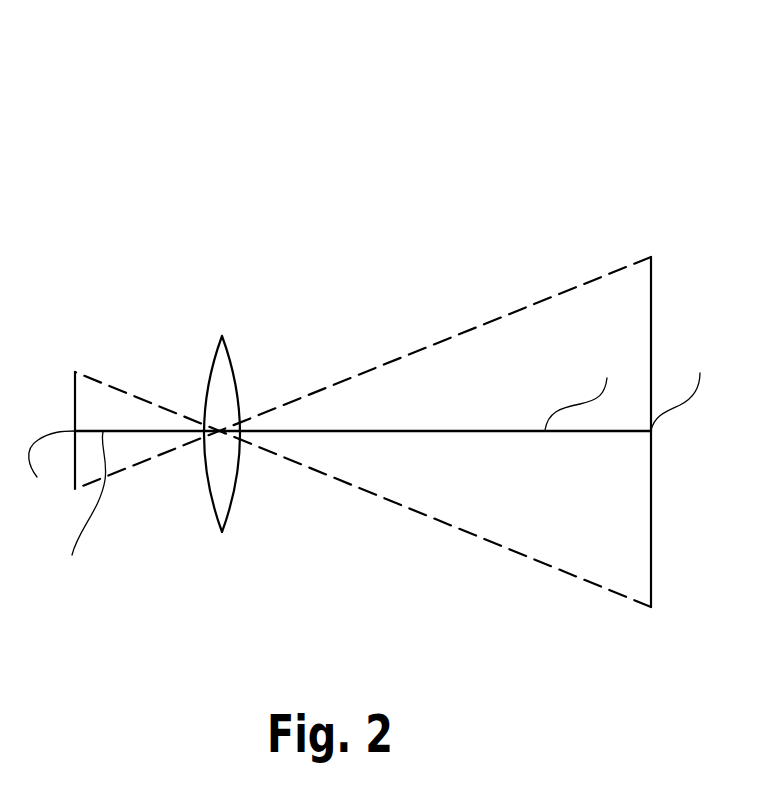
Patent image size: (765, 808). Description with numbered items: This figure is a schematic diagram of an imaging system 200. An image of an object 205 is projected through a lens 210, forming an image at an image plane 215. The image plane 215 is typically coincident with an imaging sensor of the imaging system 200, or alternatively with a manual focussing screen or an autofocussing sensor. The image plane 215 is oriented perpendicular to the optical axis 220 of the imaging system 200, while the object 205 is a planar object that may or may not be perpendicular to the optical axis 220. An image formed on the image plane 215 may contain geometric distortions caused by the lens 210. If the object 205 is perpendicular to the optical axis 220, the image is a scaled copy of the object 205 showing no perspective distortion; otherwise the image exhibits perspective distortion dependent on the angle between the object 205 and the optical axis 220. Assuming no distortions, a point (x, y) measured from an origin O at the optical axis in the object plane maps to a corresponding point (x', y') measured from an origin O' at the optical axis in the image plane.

The imaging system 200 is at (355, 141).
The object 205 is at (651, 257).
The lens 210 is at (223, 334).
The image plane 215 is at (75, 371).
The optical axis 220 is at (415, 432).